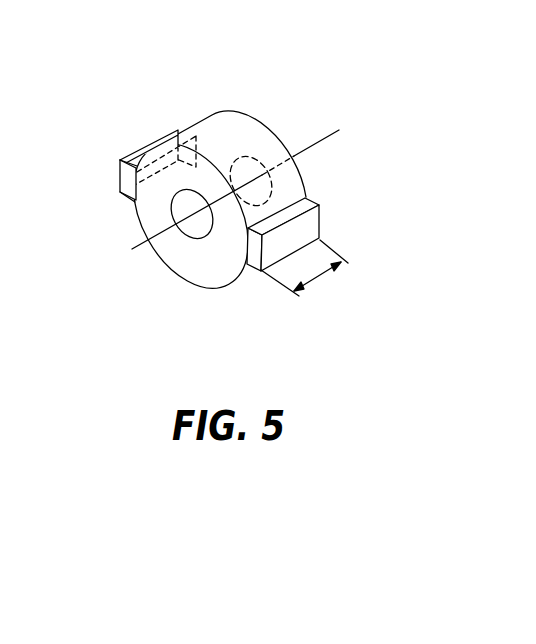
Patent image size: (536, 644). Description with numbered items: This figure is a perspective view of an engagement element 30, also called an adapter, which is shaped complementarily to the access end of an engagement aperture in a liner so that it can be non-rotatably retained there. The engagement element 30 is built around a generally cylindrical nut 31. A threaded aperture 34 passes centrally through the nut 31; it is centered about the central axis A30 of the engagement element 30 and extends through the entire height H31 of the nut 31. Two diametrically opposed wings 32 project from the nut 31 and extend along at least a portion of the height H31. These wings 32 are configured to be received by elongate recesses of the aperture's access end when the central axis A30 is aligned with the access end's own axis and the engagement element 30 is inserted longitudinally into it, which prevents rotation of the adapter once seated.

The engagement element 30 is at (201, 193).
The nut 31 is at (228, 130).
The wings 32 is at (175, 230).
The threaded aperture 34 is at (141, 163).
The central axis A30 is at (319, 138).
The height H31 is at (343, 262).